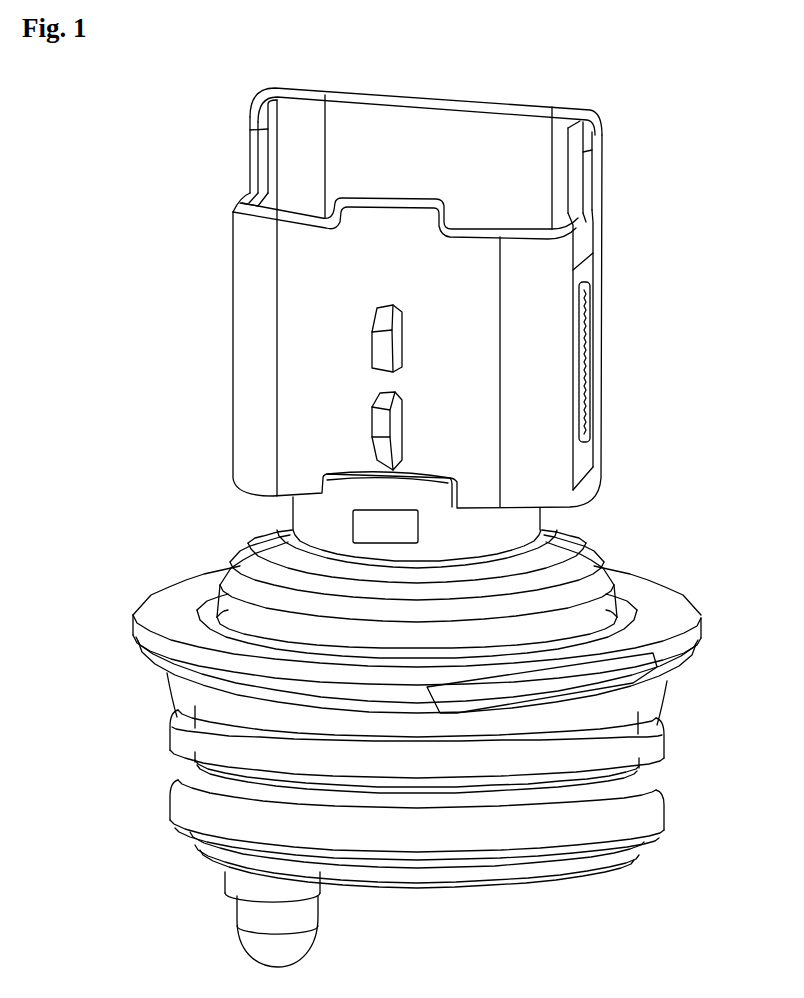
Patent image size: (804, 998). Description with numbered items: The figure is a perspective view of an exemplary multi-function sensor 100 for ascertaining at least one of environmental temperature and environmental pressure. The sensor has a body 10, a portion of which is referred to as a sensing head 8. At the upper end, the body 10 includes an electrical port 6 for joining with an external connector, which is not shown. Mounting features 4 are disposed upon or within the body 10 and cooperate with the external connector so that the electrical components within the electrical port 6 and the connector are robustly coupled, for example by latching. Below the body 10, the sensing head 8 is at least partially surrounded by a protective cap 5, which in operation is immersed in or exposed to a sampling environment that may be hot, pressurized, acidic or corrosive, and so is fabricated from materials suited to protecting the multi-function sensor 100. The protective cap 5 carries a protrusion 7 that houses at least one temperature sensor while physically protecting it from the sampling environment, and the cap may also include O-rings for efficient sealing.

The multi-function sensor 100 is at (672, 88).
The body 10 is at (248, 312).
The electrical port 6 is at (457, 79).
The mounting features 4 is at (383, 345).
The sensing head 8 is at (563, 572).
The protective cap 5 is at (640, 615).
The protrusion 7 is at (262, 945).